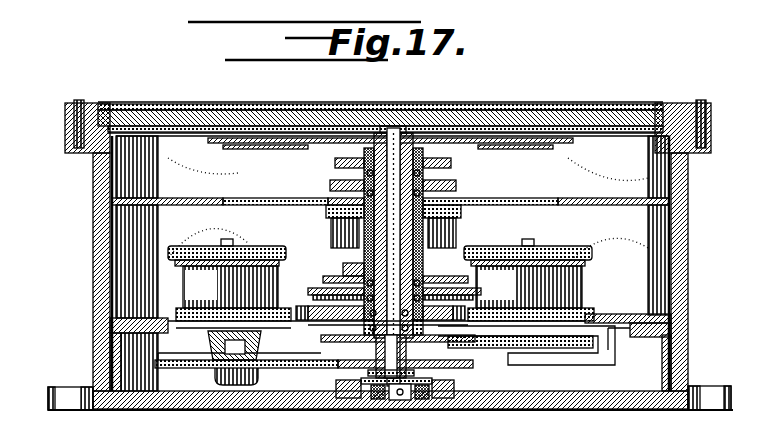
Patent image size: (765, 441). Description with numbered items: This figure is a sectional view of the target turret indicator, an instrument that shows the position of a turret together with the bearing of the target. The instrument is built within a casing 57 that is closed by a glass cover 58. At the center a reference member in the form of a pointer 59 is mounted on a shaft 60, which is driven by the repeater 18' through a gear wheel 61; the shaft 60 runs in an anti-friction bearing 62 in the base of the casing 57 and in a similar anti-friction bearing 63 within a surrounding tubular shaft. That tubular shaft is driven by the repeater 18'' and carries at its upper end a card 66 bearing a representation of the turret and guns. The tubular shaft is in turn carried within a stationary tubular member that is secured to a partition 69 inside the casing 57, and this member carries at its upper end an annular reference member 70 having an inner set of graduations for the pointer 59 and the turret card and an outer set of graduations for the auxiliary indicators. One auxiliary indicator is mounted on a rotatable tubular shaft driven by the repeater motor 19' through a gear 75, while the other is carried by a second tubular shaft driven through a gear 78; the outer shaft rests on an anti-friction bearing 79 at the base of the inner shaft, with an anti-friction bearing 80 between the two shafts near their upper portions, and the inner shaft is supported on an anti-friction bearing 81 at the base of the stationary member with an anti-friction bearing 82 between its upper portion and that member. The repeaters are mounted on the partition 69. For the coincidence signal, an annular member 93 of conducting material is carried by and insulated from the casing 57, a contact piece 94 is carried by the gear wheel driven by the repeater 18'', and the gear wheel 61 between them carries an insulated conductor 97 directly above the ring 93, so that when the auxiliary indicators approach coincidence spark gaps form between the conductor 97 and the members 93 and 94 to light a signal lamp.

The casing 57 is at (86, 262).
The glass cover 58 is at (537, 108).
The pointer 59 is at (404, 126).
The shaft 60 is at (384, 122).
The gear wheel 61 is at (316, 348).
The anti-friction bearing 62 is at (376, 392).
The anti-friction bearing 63 is at (360, 322).
The card 66 is at (506, 137).
The partition 69 is at (606, 307).
The annular reference member 70 is at (392, 227).
The gear 75 is at (330, 290).
The gear 78 is at (322, 270).
The anti-friction bearing 79 is at (354, 260).
The anti-friction bearing 80 is at (426, 169).
The anti-friction bearing 81 is at (433, 322).
The anti-friction bearing 82 is at (349, 166).
The annular member 93 is at (327, 373).
The contact piece 94 is at (437, 347).
The conductor 97 is at (436, 360).
The repeater 18' is at (229, 283).
The repeater 18'' is at (529, 280).
The repeater motor 19' is at (406, 226).